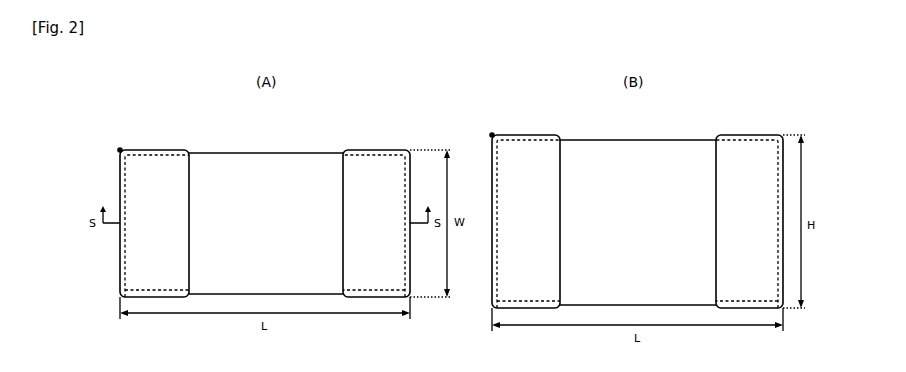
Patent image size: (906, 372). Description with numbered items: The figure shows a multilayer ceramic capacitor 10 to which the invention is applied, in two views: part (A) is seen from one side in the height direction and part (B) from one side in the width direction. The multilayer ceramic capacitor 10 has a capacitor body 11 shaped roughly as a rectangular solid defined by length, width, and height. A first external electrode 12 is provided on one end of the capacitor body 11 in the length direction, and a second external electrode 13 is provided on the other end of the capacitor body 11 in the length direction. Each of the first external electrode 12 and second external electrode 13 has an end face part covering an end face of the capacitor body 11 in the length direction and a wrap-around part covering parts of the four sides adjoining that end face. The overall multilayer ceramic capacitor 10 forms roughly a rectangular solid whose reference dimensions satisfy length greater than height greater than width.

The multilayer ceramic capacitor 10 is at (120, 150).
The capacitor body 11 is at (258, 153).
The first external electrode 12 is at (163, 153).
The second external electrode 13 is at (373, 153).